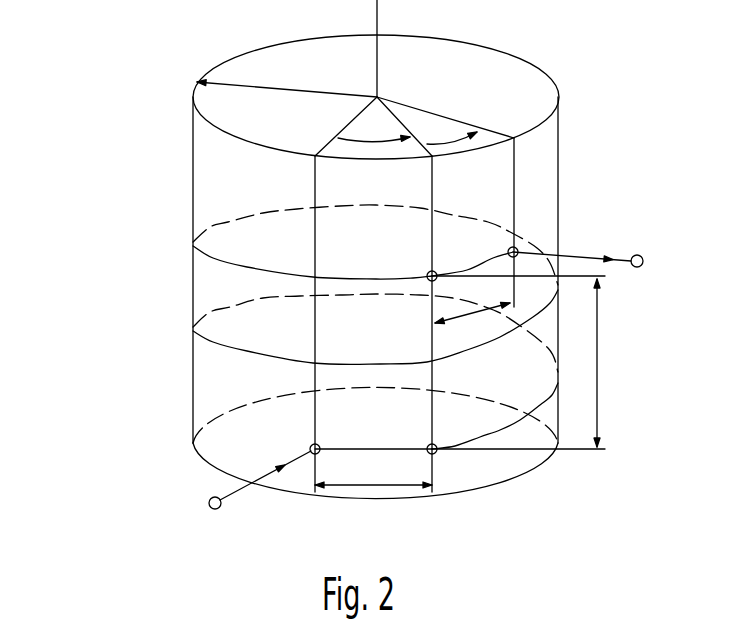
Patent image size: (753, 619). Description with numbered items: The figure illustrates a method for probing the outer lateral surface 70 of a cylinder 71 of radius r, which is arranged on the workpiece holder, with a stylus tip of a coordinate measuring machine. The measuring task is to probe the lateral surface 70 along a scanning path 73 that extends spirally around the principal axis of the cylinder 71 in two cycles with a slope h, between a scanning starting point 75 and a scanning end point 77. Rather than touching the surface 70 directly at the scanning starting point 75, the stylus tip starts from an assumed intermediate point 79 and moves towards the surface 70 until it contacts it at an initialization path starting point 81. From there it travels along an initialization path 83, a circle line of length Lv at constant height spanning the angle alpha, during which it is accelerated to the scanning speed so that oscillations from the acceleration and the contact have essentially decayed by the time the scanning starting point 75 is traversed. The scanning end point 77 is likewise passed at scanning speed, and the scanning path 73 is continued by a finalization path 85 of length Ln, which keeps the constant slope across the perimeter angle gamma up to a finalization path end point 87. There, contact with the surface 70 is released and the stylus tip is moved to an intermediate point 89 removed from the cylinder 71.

The outer lateral surface 70 is at (233, 174).
The cylinder 71 is at (560, 139).
The scanning path 73 is at (210, 347).
The scanning starting point 75 is at (433, 454).
The scanning end point 77 is at (427, 274).
The intermediate point 79 is at (215, 509).
The initialization path starting point 81 is at (309, 446).
The initialization path 83 is at (368, 447).
The finalization path 85 is at (470, 265).
The finalization path end point 87 is at (518, 247).
The intermediate point 89 is at (641, 255).